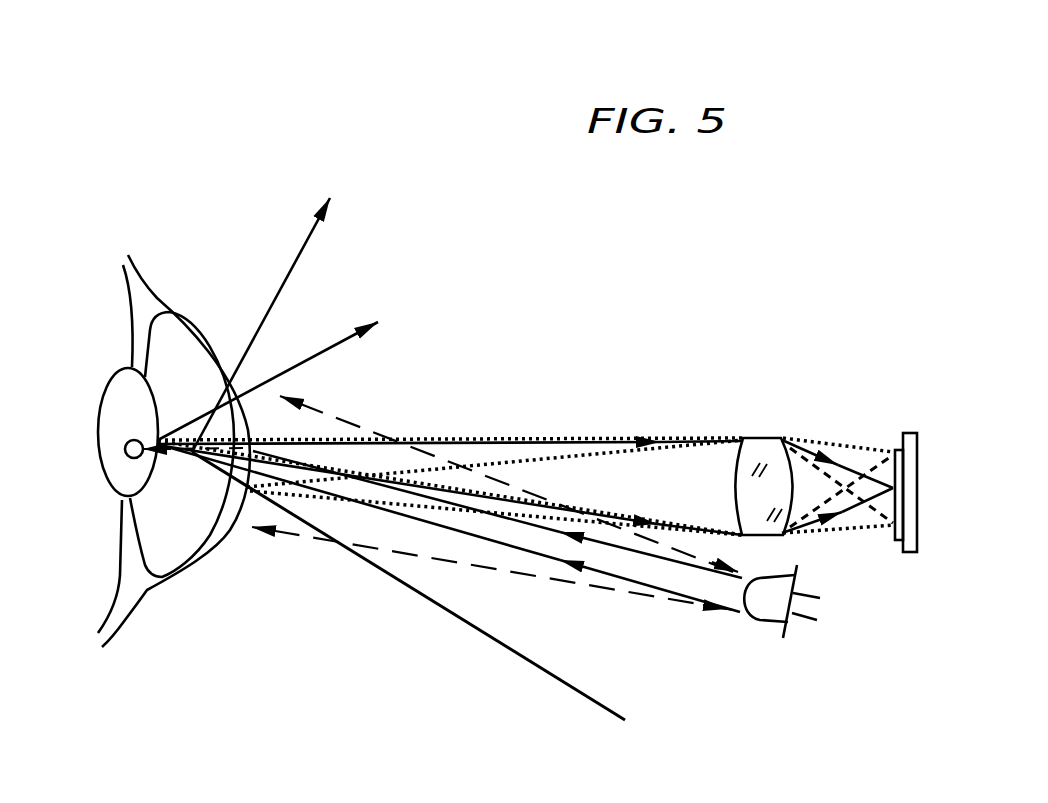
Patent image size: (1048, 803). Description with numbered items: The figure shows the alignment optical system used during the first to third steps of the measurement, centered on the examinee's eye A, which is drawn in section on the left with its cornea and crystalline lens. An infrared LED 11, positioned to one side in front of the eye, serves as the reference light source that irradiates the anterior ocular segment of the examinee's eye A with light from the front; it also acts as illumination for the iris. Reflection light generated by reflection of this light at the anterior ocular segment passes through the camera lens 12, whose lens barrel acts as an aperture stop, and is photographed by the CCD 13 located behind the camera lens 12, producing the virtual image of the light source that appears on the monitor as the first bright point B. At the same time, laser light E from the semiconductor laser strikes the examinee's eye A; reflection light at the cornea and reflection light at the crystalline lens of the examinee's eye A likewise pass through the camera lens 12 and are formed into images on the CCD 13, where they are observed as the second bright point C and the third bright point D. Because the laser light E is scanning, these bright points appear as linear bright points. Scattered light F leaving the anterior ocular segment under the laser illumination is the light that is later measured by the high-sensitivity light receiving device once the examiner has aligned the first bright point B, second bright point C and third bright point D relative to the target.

The infrared LED 11 is at (772, 607).
The camera lens 12 is at (760, 450).
The CCD 13 is at (920, 453).
The examinee's eye A is at (198, 312).
The first bright point B is at (862, 470).
The second bright point C is at (893, 477).
The third bright point D is at (893, 523).
The laser light E is at (490, 637).
The scattered light F is at (308, 243).